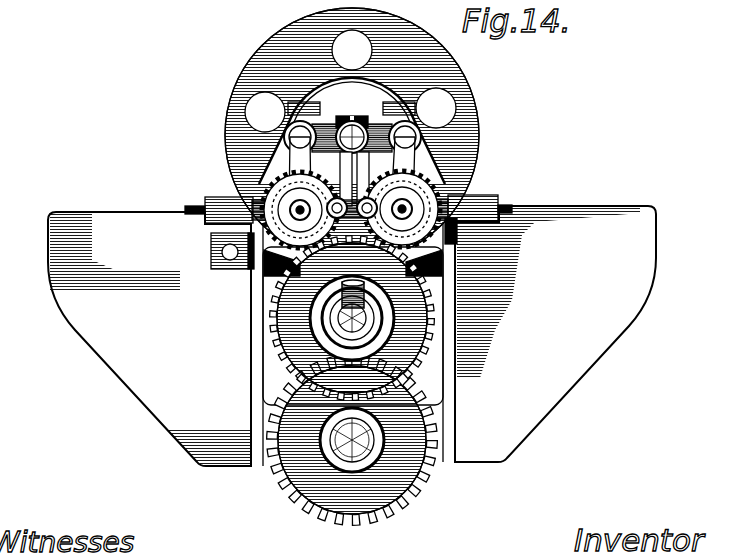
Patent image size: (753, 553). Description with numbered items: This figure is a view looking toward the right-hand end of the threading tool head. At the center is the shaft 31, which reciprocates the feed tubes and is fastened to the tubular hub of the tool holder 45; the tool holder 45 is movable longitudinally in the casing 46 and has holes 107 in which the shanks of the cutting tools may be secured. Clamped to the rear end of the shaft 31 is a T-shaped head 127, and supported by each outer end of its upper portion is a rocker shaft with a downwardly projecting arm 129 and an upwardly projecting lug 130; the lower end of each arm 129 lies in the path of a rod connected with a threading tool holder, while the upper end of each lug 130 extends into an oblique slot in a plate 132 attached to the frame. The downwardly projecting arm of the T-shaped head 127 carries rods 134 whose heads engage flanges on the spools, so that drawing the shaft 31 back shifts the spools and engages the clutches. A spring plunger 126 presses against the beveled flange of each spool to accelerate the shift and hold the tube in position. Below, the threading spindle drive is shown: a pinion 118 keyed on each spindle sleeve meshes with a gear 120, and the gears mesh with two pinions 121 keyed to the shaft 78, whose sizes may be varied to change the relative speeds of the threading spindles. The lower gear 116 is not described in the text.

The shaft 31 is at (370, 90).
The tool holder 45 is at (372, 50).
The casing 46 is at (330, 98).
The shaft 78 is at (378, 437).
The holes 107 is at (352, 50).
The lower gear 116 is at (335, 514).
The pinion 118 is at (238, 270).
The gear 120 is at (269, 340).
The pinions 121 is at (307, 458).
The spring plunger 126 is at (248, 194).
The T-shaped head 127 is at (352, 143).
The arm 129 is at (288, 148).
The lug 130 is at (296, 100).
The plate 132 is at (304, 100).
The rods 134 is at (352, 282).